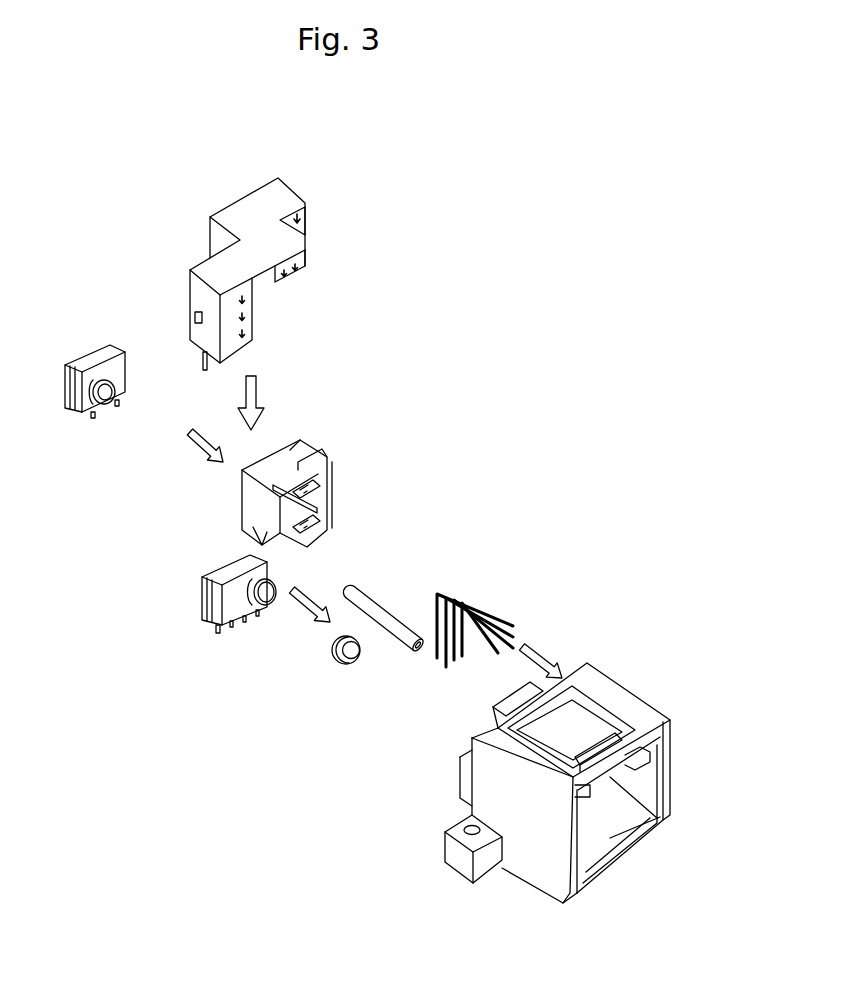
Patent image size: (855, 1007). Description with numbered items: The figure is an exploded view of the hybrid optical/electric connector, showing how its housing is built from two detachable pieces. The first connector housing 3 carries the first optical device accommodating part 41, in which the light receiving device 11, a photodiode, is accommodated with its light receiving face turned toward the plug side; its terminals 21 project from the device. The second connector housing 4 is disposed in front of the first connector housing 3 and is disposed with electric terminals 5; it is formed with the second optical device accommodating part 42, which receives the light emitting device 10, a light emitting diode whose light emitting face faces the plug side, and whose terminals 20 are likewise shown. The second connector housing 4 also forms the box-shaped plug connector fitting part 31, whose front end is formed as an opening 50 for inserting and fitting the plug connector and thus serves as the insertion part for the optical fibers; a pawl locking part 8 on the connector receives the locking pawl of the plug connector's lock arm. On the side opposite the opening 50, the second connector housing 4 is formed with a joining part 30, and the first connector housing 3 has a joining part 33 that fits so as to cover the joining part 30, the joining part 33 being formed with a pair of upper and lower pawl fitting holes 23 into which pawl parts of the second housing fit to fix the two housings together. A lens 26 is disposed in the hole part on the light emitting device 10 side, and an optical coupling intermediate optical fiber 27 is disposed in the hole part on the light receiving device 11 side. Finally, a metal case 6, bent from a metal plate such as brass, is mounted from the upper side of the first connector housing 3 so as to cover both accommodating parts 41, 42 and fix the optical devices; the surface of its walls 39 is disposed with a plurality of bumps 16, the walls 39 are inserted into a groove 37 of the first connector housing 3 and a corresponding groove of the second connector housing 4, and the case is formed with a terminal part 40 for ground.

The first connector housing 3 is at (310, 447).
The second connector housing 4 is at (640, 708).
The electric terminals 5 is at (483, 605).
The metal case 6 is at (288, 193).
The pawl locking part 8 is at (617, 762).
The light emitting device 10 is at (205, 622).
The light receiving device 11 is at (122, 380).
The bumps 16 is at (307, 260).
The terminals of the light emitting device 20 is at (243, 622).
The terminals of the light receiving device 21 is at (90, 415).
The pawl fitting holes 23 is at (328, 480).
The lens 26 is at (335, 663).
The optical coupling intermediate optical fiber 27 is at (383, 620).
The joining part 30 is at (497, 715).
The plug connector fitting part 31 is at (610, 692).
The joining part 33 is at (320, 470).
The groove 37 is at (320, 453).
The walls 39 is at (305, 222).
The terminal part for ground 40 is at (200, 372).
The first optical device accommodating part 41 is at (298, 445).
The second optical device accommodating part 42 is at (463, 780).
The opening 50 is at (665, 785).